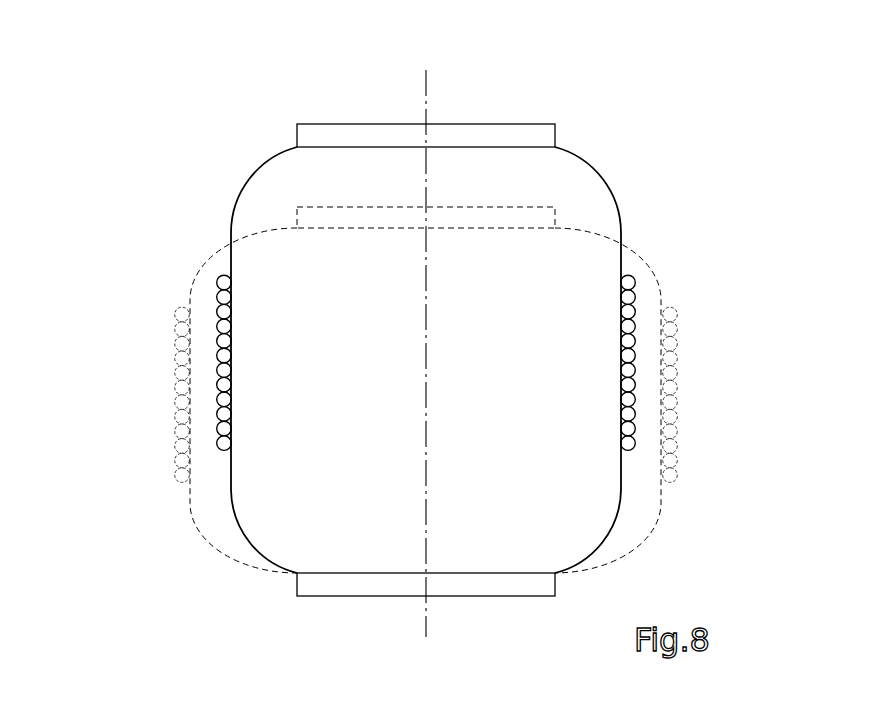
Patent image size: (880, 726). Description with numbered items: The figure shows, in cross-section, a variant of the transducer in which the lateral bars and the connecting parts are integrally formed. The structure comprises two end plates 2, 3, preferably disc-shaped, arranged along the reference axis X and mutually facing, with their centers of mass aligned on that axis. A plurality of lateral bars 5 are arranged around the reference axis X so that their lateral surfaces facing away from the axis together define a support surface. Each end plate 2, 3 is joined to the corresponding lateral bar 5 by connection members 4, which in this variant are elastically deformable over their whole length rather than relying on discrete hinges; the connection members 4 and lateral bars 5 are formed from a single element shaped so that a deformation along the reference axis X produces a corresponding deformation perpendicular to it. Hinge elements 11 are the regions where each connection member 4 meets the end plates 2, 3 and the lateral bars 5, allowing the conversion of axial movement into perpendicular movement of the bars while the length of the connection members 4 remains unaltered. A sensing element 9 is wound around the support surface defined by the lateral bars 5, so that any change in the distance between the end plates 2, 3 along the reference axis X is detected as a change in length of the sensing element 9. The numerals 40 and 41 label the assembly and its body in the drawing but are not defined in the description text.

The vessel assembly 40 is at (146, 43).
The vessel body 41 is at (447, 341).
The end plate 2 is at (383, 220).
The end plate 3 is at (369, 582).
The connection member 4 is at (213, 255).
The lateral bar 5 is at (231, 262).
The sensing element 9 is at (628, 340).
The hinge element 11 is at (459, 400).
The reference axis X is at (426, 93).